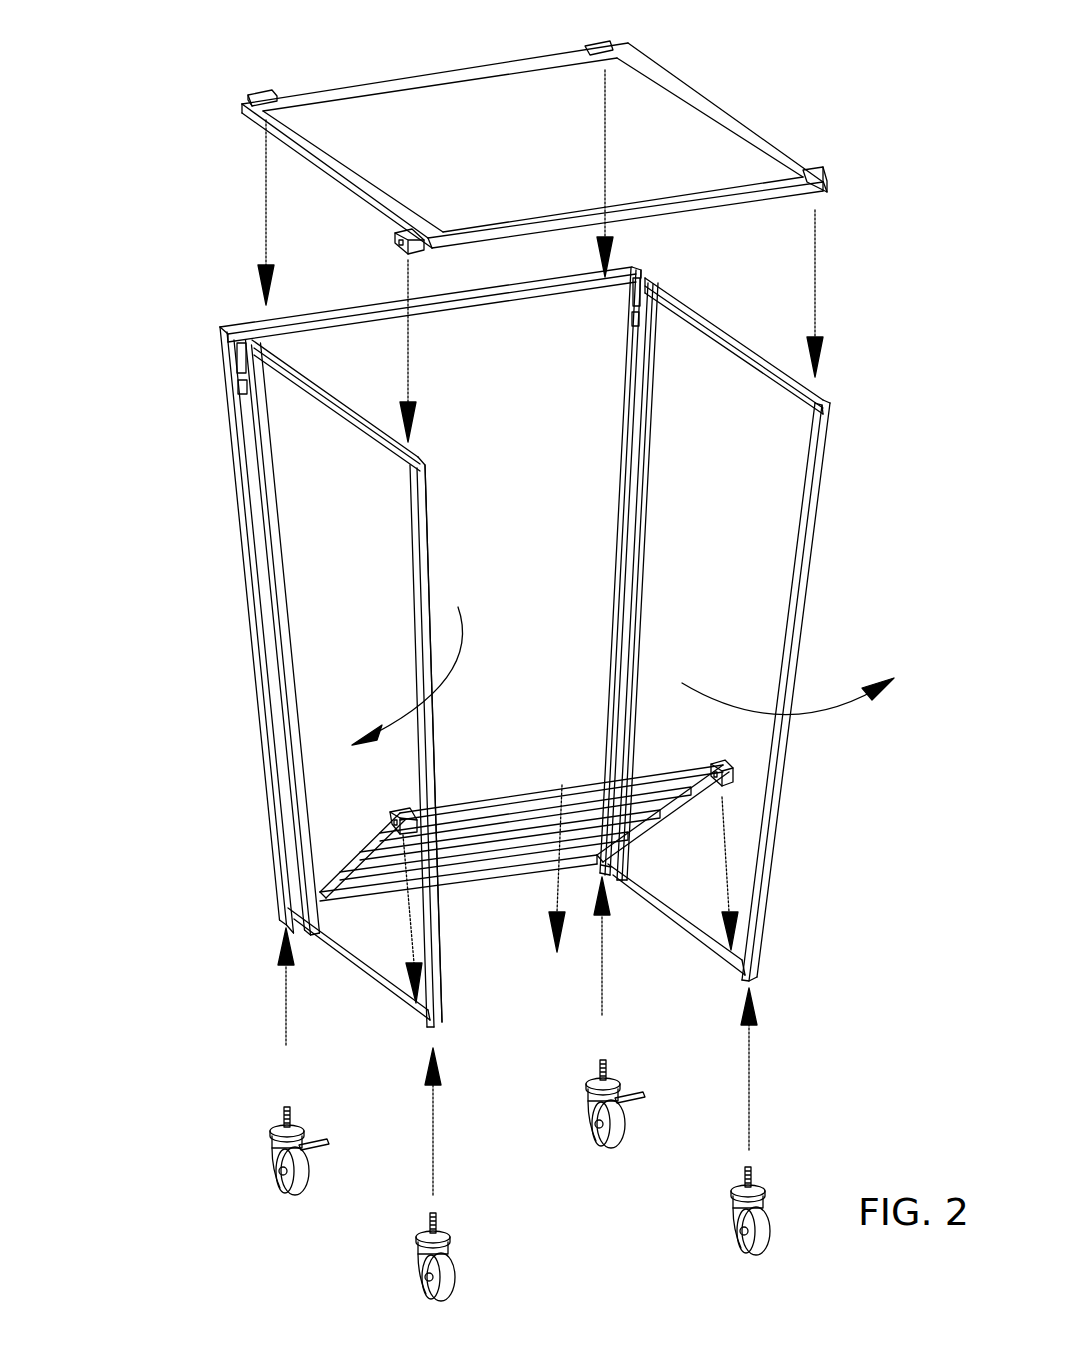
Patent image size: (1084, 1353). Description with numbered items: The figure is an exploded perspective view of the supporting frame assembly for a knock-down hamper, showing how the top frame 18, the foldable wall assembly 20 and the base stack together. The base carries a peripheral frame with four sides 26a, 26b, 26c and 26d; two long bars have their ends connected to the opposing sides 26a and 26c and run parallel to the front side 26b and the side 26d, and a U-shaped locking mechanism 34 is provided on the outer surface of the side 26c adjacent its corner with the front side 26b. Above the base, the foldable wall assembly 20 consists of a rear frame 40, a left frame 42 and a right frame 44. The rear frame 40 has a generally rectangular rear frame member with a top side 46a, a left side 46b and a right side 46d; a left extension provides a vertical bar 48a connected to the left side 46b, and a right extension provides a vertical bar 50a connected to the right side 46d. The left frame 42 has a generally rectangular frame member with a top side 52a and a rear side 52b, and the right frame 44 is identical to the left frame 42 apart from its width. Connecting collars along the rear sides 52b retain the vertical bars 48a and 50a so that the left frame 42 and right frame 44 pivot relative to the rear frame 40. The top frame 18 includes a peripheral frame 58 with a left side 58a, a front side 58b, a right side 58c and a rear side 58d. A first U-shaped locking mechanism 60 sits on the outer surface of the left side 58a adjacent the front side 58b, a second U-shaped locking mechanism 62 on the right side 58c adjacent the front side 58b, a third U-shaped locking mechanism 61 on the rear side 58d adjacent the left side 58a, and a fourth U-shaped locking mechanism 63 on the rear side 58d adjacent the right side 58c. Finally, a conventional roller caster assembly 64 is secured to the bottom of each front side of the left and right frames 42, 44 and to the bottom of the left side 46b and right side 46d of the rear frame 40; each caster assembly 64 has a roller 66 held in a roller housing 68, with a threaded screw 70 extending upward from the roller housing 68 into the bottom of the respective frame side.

The top frame 18 is at (244, 148).
The foldable wall assembly 20 is at (168, 489).
The side 26a is at (356, 850).
The front side 26b is at (486, 800).
The side 26c is at (660, 825).
The side 26d is at (500, 876).
The U-shaped locking mechanism 34 is at (735, 771).
The rear frame 40 is at (245, 322).
The left frame 42 is at (364, 995).
The right frame 44 is at (832, 455).
The top side 46a is at (517, 292).
The left side 46b is at (248, 526).
The right side 46d is at (622, 452).
The vertical bar 48a is at (250, 402).
The vertical bar 50a is at (640, 362).
The top side 52a is at (718, 318).
The rear side 52b is at (650, 432).
The peripheral frame 58 is at (765, 120).
The left side 58a is at (346, 171).
The front side 58b is at (522, 212).
The right side 58c is at (672, 72).
The rear side 58d is at (402, 78).
The first U-shaped locking mechanism 60 is at (395, 251).
The third U-shaped locking mechanism 61 is at (270, 93).
The second U-shaped locking mechanism 62 is at (826, 174).
The fourth U-shaped locking mechanism 63 is at (605, 43).
The roller caster assembly 64 is at (660, 1080).
The roller 66 is at (642, 1129).
The roller housing 68 is at (581, 1109).
The threaded screw 70 is at (636, 1052).